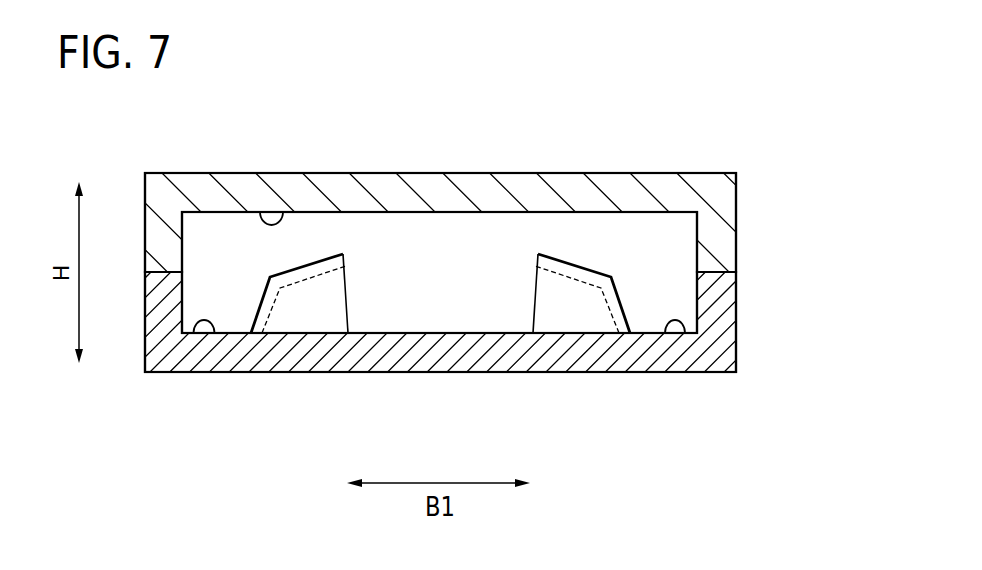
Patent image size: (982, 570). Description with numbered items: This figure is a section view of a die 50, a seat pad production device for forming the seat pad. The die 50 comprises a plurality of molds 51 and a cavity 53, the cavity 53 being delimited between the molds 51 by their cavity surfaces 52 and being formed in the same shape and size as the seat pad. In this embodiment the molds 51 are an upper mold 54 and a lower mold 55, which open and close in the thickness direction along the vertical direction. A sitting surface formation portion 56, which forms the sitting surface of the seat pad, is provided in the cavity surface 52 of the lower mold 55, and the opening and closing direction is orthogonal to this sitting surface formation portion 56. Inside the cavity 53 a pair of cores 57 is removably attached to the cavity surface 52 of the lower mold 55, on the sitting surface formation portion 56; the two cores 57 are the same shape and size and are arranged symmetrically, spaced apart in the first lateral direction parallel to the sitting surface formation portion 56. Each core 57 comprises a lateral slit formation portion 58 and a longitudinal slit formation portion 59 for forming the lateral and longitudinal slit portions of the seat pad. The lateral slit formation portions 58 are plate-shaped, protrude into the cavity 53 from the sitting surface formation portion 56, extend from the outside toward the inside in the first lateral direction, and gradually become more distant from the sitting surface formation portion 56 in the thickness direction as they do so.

The die 50 is at (766, 103).
The molds 51 is at (461, 272).
The cavity surfaces 52 is at (278, 212).
The cavity 53 is at (454, 278).
The upper mold 54 is at (736, 214).
The lower mold 55 is at (736, 312).
The sitting surface formation portion 56 is at (676, 323).
The cores 57 is at (441, 367).
The lateral slit formation portions 58 is at (260, 322).
The longitudinal slit formation portions 59 is at (317, 314).